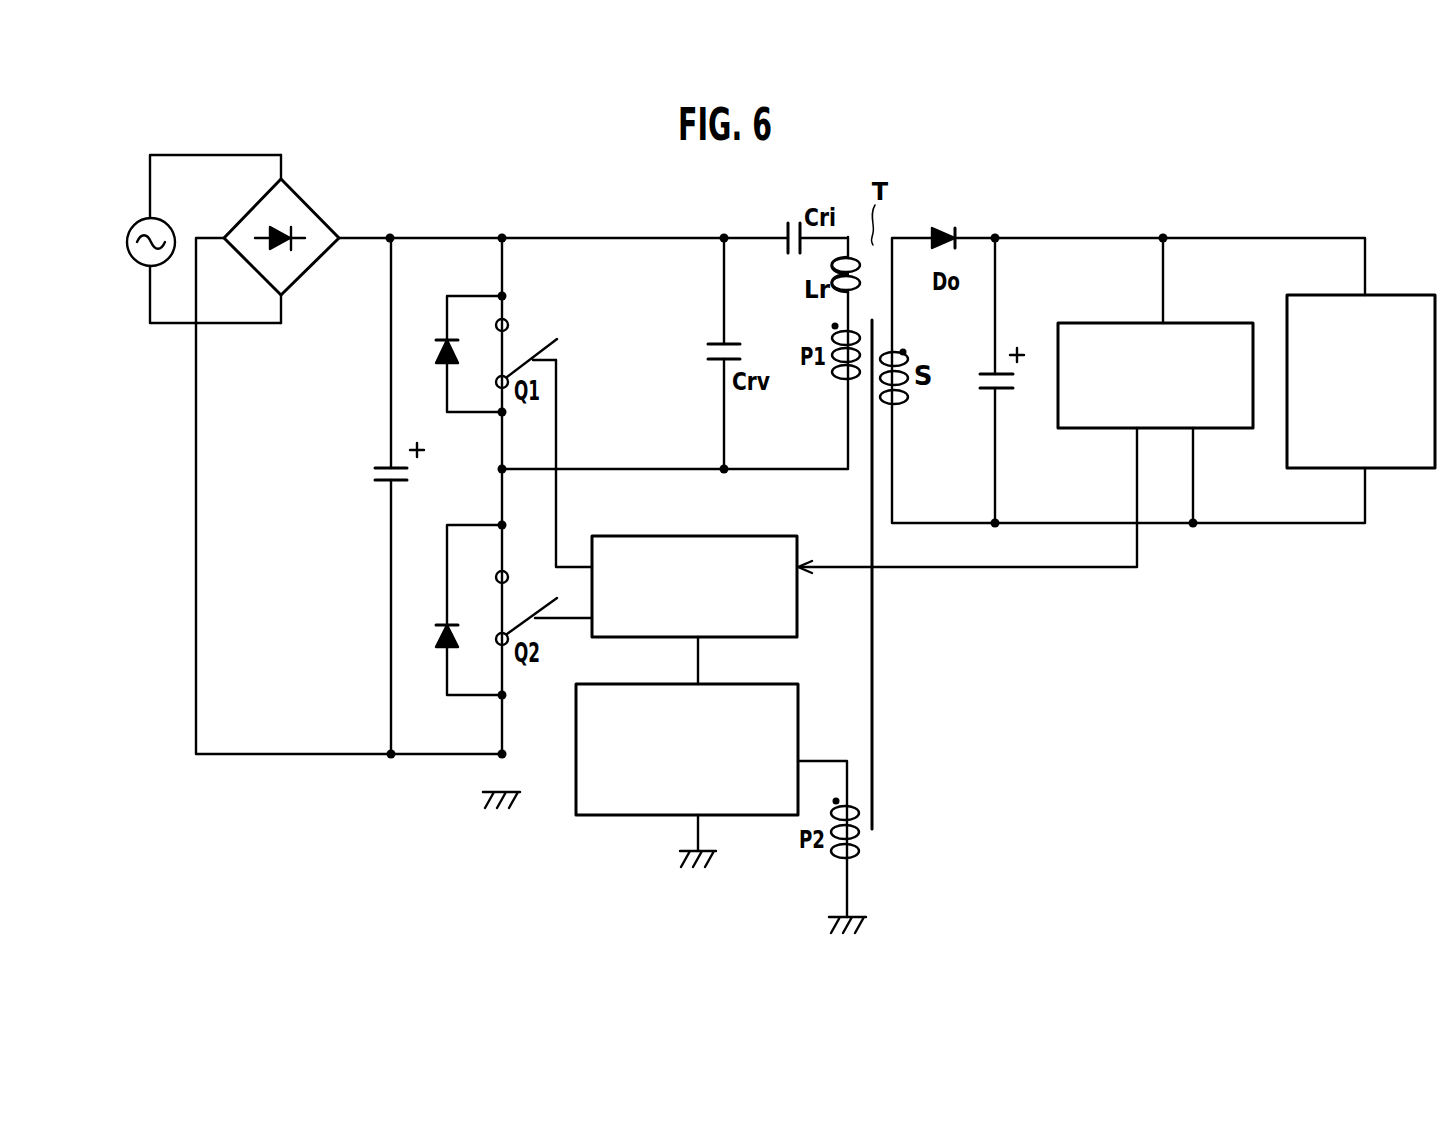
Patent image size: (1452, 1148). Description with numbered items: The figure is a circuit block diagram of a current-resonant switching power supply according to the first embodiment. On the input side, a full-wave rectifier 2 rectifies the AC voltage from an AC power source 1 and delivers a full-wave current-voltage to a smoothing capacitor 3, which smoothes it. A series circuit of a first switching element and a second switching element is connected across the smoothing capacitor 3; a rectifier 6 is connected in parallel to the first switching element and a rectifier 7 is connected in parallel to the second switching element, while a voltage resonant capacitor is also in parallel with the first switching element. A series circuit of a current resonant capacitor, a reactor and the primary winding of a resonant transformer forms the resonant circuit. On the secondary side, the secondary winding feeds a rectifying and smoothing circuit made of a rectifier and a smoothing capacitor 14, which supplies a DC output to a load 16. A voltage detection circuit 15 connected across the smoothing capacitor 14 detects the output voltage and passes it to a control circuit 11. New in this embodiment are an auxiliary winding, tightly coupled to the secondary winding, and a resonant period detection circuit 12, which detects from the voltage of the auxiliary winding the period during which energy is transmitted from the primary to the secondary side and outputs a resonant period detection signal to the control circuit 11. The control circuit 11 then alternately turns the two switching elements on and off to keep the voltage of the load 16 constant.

The AC power source 1 is at (140, 228).
The full-wave rectifier 2 is at (313, 200).
The smoothing capacitor 3 is at (372, 476).
The rectifier 6 is at (437, 360).
The rectifier 7 is at (440, 648).
The control circuit 11 is at (759, 536).
The resonant period detection circuit 12 is at (772, 684).
The smoothing capacitor 14 is at (1003, 392).
The voltage detection circuit 15 is at (1203, 323).
The load 16 is at (1423, 293).